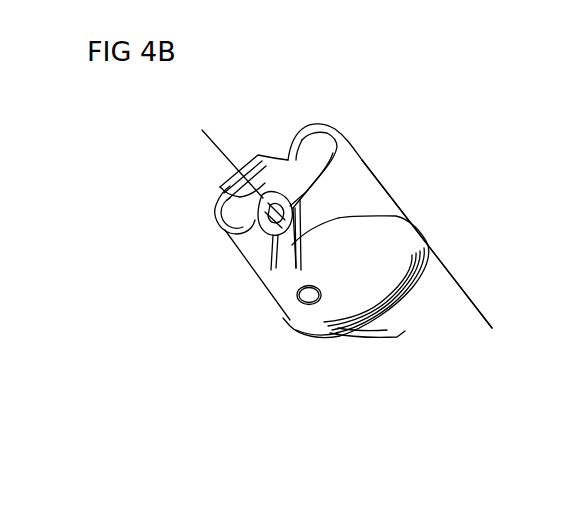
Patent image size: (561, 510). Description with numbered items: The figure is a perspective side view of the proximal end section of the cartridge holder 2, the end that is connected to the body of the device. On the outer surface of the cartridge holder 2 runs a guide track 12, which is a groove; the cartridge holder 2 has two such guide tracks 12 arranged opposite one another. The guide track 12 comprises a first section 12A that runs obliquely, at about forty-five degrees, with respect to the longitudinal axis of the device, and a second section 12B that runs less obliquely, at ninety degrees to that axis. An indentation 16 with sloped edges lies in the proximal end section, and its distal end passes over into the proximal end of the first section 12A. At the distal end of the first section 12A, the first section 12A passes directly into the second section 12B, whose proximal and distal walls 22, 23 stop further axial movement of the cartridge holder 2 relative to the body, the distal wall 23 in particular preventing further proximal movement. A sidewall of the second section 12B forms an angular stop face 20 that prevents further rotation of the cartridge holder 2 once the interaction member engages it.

The cartridge holder 2 is at (440, 259).
The guide track 12 is at (290, 160).
The first section 12A is at (388, 212).
The second section 12B is at (289, 263).
The indentation 16 is at (293, 208).
The angular stop face 20 is at (273, 278).
The proximal wall 22 is at (273, 260).
The distal wall 23 is at (294, 279).